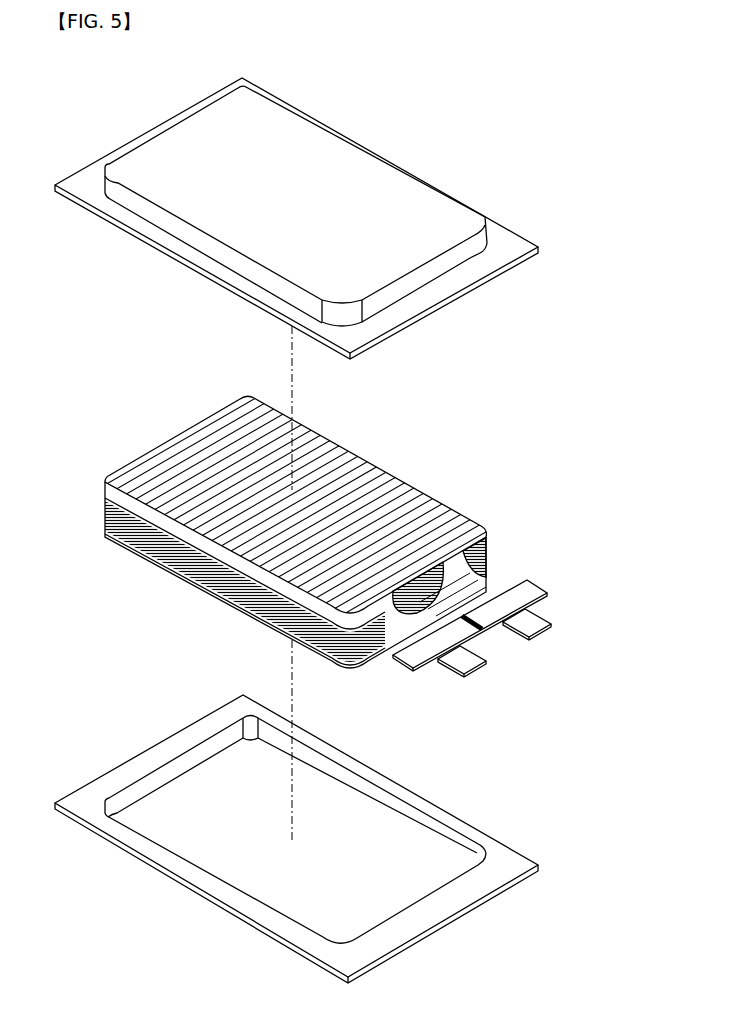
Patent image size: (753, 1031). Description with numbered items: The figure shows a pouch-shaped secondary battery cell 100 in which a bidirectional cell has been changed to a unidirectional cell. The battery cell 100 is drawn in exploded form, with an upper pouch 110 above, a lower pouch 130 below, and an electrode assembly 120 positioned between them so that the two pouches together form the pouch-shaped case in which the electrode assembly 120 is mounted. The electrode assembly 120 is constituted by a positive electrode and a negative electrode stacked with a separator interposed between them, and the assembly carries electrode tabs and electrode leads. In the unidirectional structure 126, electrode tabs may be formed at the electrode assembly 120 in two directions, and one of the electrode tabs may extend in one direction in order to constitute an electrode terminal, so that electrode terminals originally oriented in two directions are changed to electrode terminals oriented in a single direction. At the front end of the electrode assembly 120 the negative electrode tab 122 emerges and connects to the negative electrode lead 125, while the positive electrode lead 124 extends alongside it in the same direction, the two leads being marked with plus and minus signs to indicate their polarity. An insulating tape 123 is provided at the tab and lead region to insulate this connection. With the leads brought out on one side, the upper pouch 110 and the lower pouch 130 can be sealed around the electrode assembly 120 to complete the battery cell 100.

The battery cell 100 is at (376, 530).
The upper pouch 110 is at (472, 226).
The electrode assembly 120 is at (376, 540).
The negative electrode tab 122 is at (398, 634).
The insulating tape 123 is at (423, 657).
The positive electrode lead 124 is at (530, 620).
The negative electrode lead 125 is at (460, 675).
The unidirectional structure 126 is at (452, 506).
The lower pouch 130 is at (468, 866).